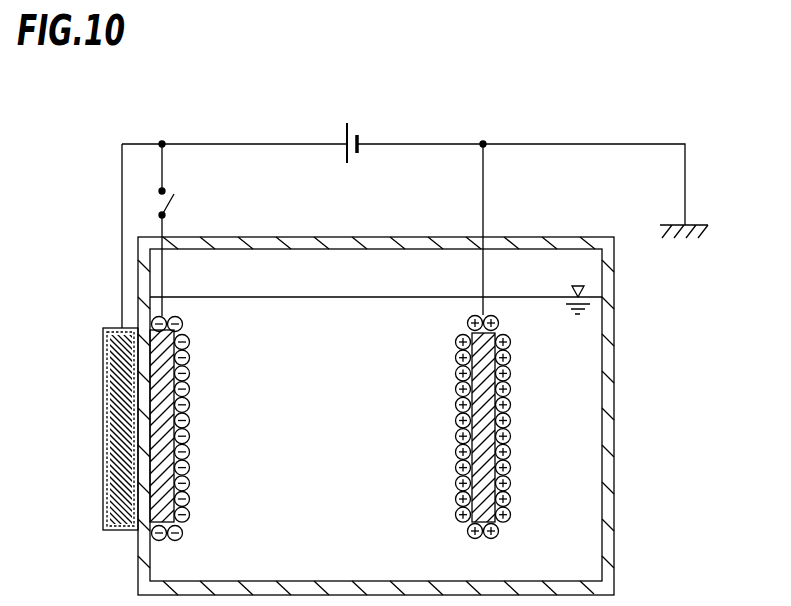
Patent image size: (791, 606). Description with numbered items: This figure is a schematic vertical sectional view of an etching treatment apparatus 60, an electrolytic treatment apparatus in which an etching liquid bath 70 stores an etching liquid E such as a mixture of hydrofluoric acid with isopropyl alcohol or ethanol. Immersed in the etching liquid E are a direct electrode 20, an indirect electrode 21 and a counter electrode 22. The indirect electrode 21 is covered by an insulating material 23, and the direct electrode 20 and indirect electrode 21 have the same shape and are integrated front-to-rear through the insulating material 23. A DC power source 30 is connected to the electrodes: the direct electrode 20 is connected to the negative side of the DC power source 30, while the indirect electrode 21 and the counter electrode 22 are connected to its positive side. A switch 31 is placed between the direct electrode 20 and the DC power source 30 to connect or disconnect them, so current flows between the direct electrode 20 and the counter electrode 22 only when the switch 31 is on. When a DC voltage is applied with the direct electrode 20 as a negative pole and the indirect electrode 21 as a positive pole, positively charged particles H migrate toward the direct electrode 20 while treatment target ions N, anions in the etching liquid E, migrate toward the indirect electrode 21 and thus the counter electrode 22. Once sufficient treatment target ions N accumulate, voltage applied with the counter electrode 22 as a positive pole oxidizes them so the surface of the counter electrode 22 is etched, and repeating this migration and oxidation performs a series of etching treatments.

The etching treatment apparatus 60 is at (296, 111).
The DC power source 30 is at (359, 137).
The switch 31 is at (167, 207).
The etching liquid bath 70 is at (608, 435).
The etching liquid E is at (590, 345).
The indirect electrode 21 is at (108, 415).
The insulating material 23 is at (100, 526).
The counter electrode 22 is at (166, 418).
The treatment target ions N is at (181, 521).
The direct electrode 20 is at (500, 418).
The positively charged particles H is at (460, 516).